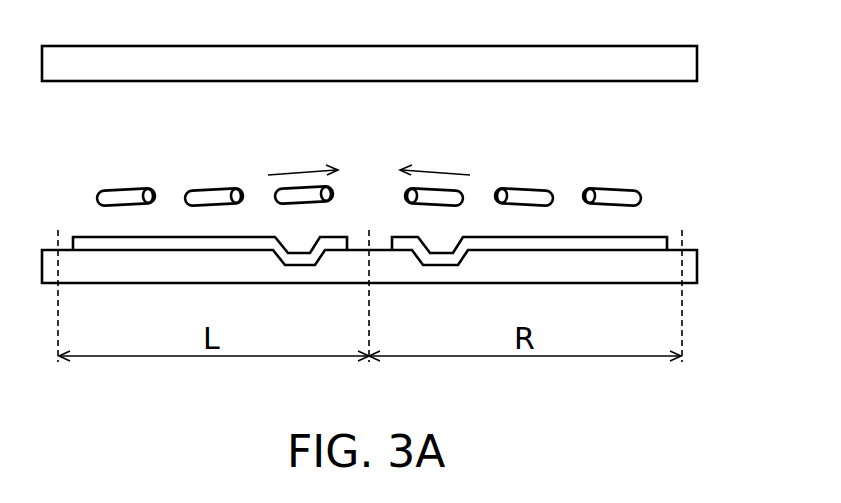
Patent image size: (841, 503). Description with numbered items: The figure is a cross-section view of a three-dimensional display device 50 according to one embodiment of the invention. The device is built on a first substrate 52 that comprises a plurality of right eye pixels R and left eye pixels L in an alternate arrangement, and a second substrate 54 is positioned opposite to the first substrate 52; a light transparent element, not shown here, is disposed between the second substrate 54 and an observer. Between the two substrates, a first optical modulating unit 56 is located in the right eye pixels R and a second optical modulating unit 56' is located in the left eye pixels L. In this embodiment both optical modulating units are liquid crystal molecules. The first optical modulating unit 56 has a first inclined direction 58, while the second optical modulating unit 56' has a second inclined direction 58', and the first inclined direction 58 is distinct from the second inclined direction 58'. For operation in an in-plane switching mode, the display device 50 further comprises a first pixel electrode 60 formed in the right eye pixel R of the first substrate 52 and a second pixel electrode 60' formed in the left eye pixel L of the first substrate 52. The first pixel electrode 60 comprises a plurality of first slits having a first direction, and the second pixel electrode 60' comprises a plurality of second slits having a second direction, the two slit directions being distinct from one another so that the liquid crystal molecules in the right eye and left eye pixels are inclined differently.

The 3D display device 50 is at (765, 346).
The first substrate 52 is at (698, 265).
The second substrate 54 is at (697, 63).
The first optical modulating unit 56 is at (523, 159).
The second optical modulating unit 56' is at (215, 159).
The first inclined direction 58 is at (435, 135).
The second inclined direction 58' is at (303, 137).
The first pixel electrode 60 is at (529, 288).
The second pixel electrode 60' is at (210, 288).